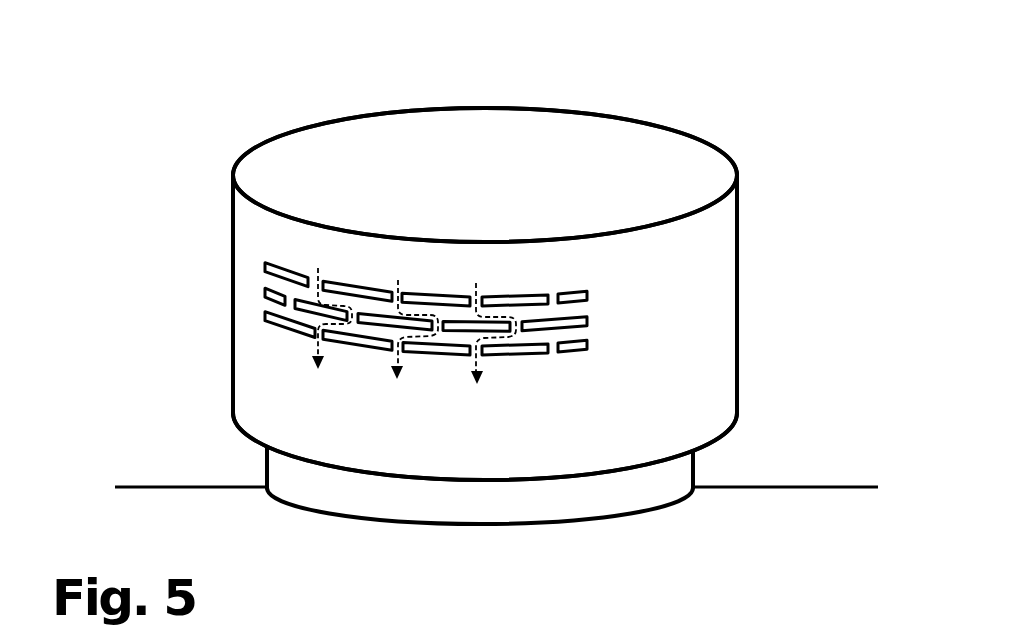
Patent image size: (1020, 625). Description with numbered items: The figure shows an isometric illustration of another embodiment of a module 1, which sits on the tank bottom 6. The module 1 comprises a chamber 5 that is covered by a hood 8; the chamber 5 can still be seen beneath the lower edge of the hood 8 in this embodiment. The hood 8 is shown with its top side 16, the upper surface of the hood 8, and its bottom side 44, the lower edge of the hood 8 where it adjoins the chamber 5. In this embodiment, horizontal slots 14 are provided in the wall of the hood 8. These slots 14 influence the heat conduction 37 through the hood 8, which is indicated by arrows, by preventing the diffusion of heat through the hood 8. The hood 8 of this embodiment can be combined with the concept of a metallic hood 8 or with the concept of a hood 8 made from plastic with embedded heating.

The module 1 is at (185, 137).
The top side 16 is at (652, 156).
The hood 8 is at (738, 275).
The horizontal slots 14 is at (265, 264).
The heat conduction 37 is at (398, 282).
The chamber 5 is at (695, 465).
The bottom side 44 is at (253, 455).
The tank bottom 6 is at (757, 488).